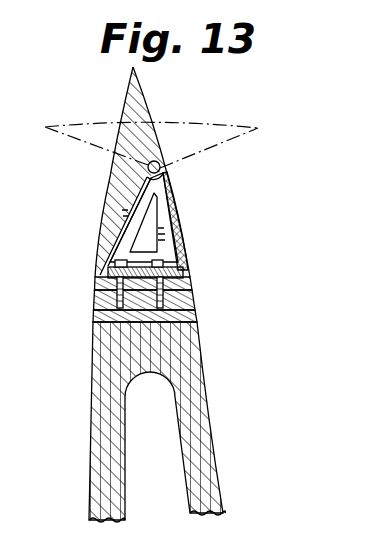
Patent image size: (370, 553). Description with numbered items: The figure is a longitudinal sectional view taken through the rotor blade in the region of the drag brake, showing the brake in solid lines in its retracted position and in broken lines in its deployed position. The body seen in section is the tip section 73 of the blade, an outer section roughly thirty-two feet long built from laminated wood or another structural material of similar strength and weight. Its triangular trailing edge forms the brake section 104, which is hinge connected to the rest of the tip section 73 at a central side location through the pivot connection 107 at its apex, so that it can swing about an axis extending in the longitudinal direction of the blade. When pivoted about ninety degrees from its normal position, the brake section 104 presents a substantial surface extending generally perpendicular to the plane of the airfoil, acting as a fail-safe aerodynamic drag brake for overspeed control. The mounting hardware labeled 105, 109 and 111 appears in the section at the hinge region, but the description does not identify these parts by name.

The tip section 73 is at (100, 386).
The brake section 104 is at (121, 170).
The pivot pin 105 is at (160, 169).
The pivot connection 107 is at (160, 222).
The base plate 109 is at (168, 268).
The bolts 111 is at (117, 291).